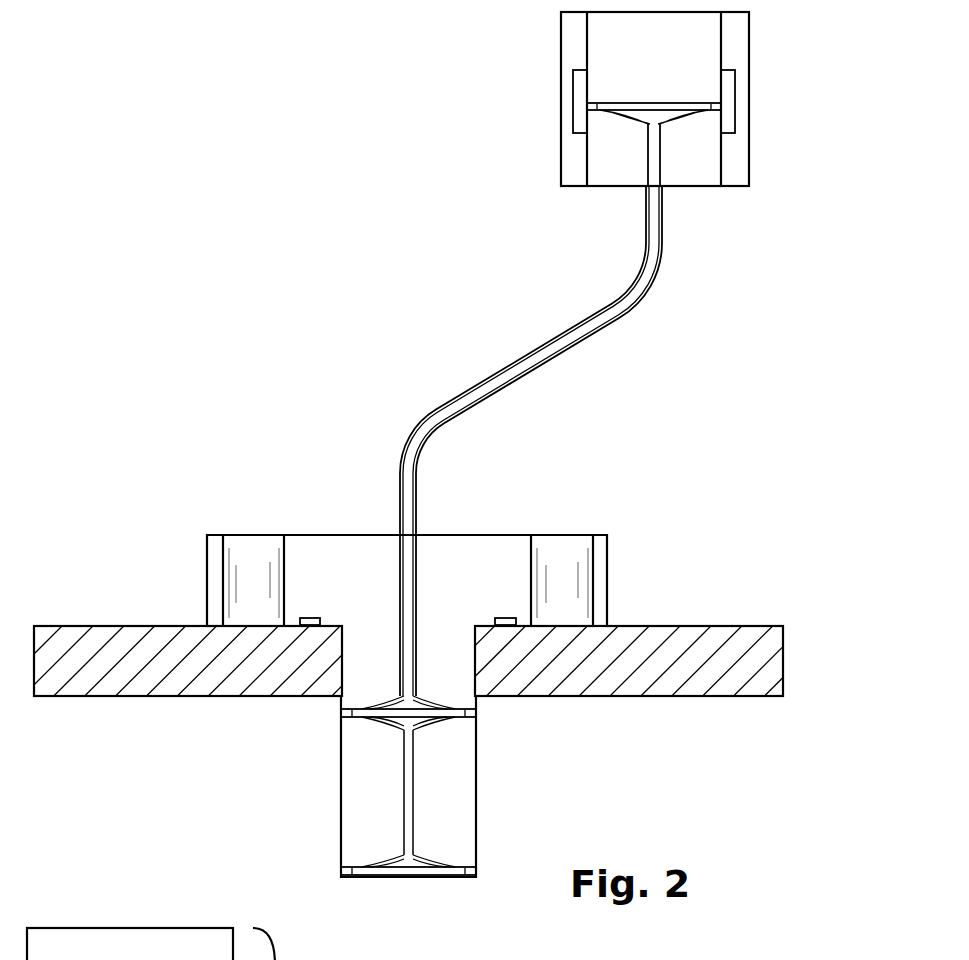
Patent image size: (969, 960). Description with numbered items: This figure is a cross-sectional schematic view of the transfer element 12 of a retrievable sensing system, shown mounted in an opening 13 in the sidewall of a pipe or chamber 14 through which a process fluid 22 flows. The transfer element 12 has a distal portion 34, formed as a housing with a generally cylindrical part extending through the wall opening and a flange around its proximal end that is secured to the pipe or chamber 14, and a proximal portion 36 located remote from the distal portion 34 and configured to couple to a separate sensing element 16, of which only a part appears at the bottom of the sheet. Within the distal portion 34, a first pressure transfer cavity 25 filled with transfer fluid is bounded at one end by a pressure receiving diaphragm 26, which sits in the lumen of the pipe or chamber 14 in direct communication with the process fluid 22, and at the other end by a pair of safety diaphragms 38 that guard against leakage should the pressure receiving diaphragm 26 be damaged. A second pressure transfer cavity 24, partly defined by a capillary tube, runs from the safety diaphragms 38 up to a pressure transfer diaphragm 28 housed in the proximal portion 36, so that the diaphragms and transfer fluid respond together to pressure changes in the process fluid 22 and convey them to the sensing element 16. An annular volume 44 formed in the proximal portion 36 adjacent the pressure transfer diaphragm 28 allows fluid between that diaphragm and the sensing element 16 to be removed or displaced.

The transfer element 12 is at (438, 186).
The opening 13 is at (331, 705).
The pipe or chamber 14 is at (752, 636).
The sensing element 16 is at (318, 959).
The process fluid 22 is at (692, 817).
The second pressure transfer cavity 24 is at (514, 382).
The first pressure transfer cavity 25 is at (404, 808).
The pressure receiving diaphragm 26 is at (452, 877).
The pressure transfer diaphragm 28 is at (626, 103).
The distal portion 34 is at (635, 530).
The proximal portion 36 is at (766, 145).
The safety diaphragms 38 is at (477, 712).
The annular volume 44 is at (580, 100).